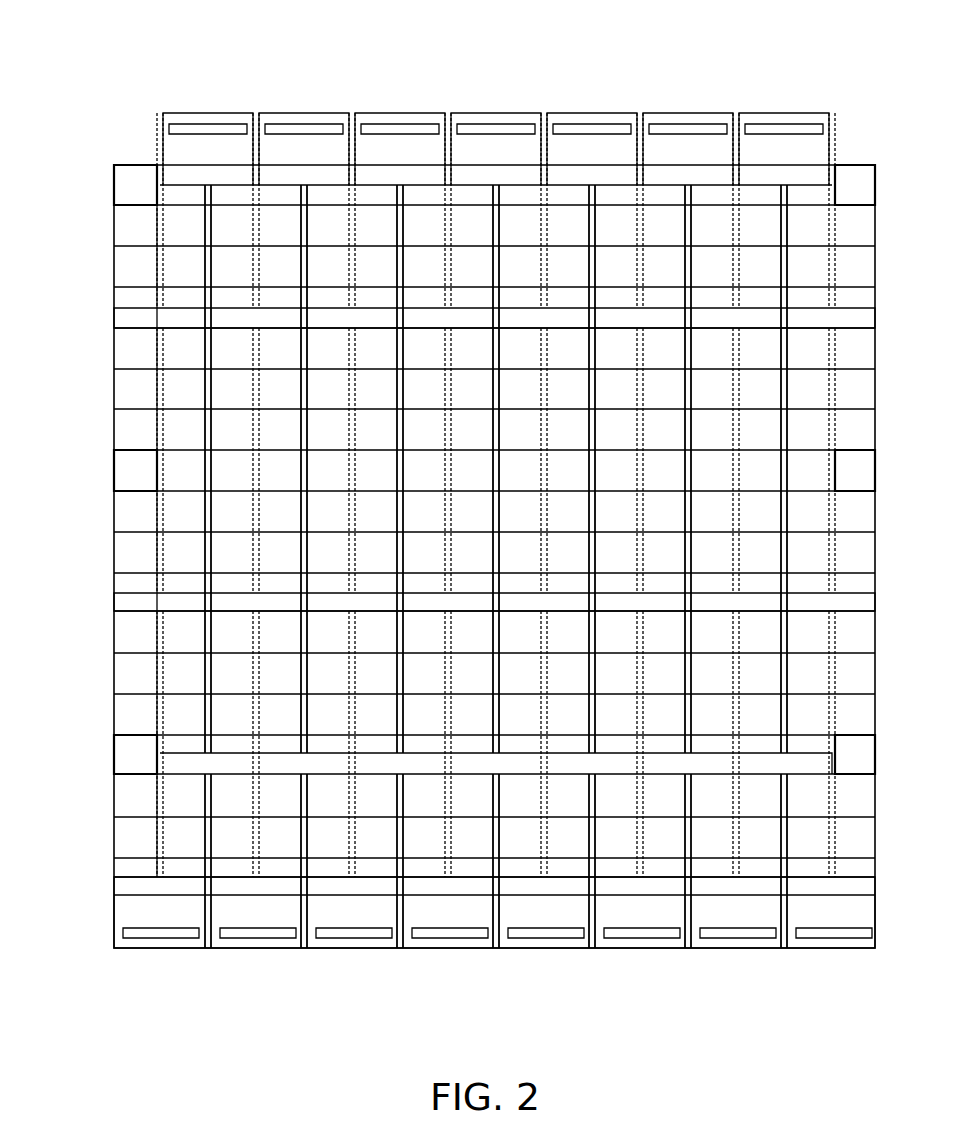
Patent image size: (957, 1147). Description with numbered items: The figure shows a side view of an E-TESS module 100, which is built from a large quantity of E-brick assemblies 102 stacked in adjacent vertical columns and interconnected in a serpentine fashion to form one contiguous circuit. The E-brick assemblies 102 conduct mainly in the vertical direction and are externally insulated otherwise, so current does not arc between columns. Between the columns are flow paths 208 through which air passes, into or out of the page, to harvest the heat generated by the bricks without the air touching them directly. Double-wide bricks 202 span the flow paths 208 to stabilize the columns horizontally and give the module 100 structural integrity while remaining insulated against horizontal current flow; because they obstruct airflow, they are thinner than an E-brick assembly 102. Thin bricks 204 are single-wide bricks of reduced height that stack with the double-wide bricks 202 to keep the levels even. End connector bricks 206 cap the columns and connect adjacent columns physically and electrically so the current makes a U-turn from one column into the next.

The E-TESS module 100 is at (147, 68).
The E-brick assembly 102 is at (114, 183).
The double-wide brick 202 is at (114, 319).
The thin brick 204 is at (114, 585).
The end connector brick 206 is at (114, 914).
The flow path 208 is at (257, 111).